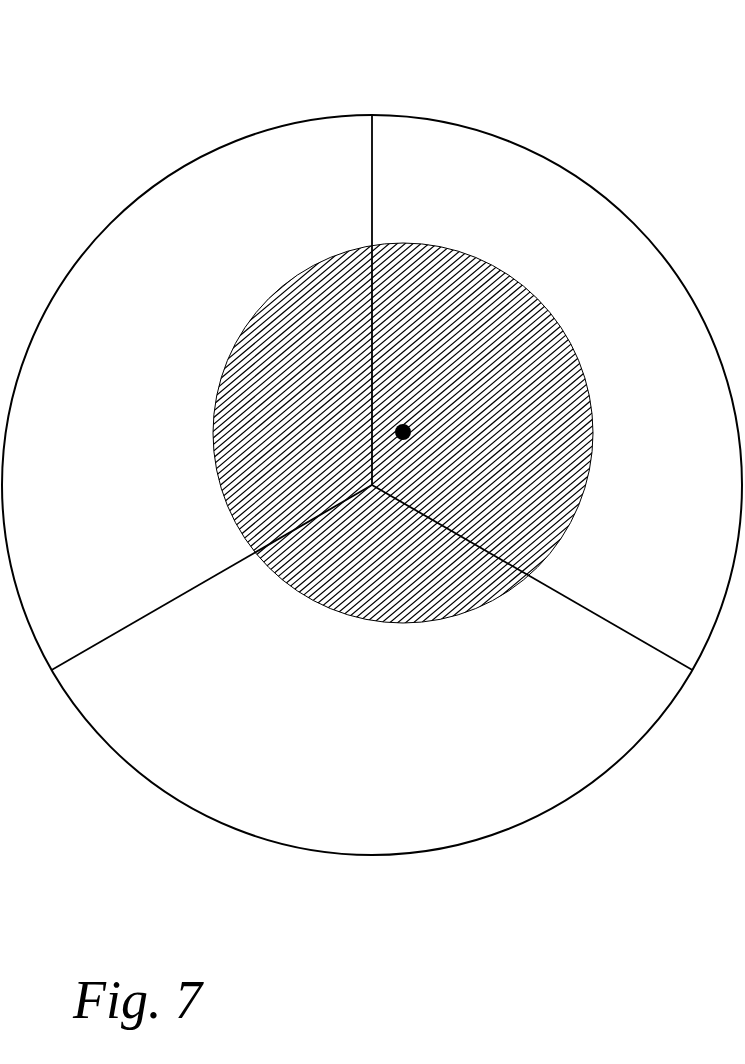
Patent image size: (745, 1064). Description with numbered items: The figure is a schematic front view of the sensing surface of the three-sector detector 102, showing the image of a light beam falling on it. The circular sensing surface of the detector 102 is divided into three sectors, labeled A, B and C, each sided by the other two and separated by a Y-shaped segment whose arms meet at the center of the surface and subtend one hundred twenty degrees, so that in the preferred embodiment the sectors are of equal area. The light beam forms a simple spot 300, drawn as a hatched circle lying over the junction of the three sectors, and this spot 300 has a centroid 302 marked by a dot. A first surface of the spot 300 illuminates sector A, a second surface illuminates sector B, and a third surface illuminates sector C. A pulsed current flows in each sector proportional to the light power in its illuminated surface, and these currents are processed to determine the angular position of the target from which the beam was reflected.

The three-sector detector 102 is at (147, 45).
The spot 300 is at (547, 312).
The centroid 302 is at (410, 430).